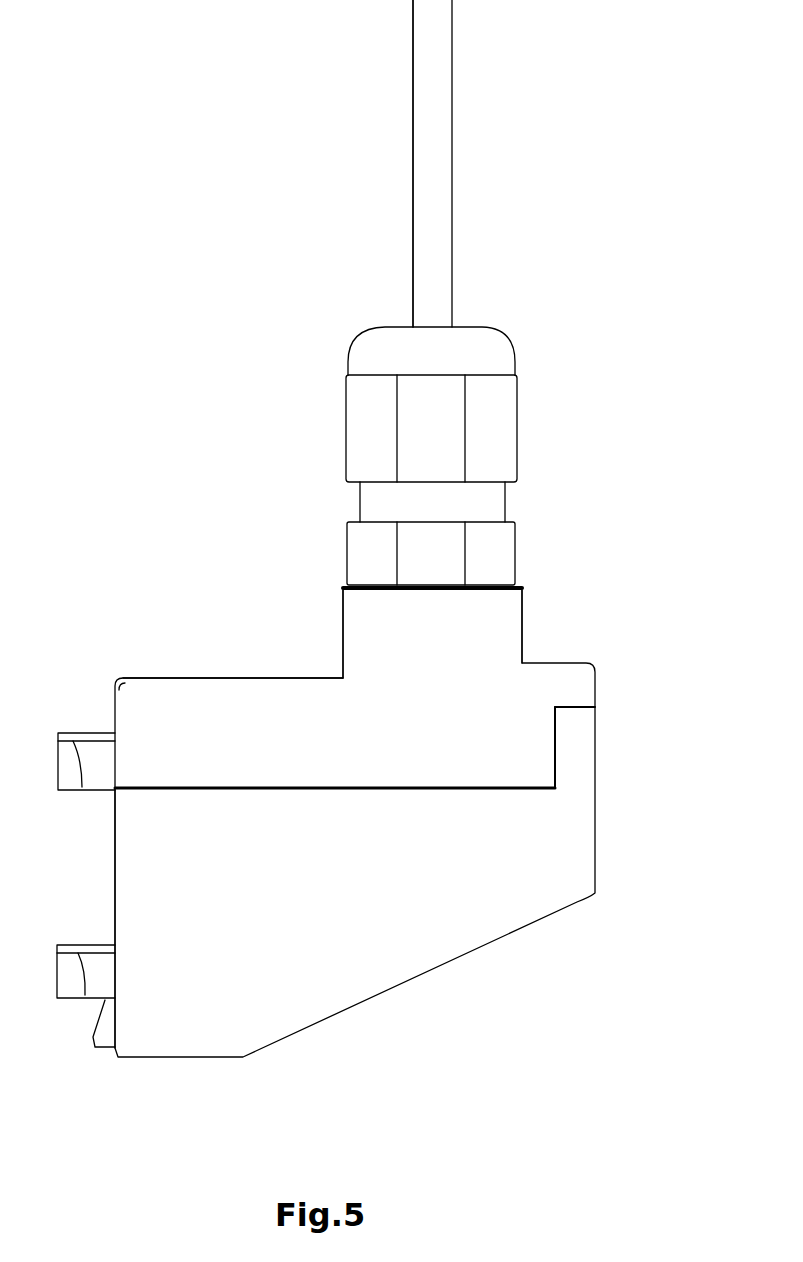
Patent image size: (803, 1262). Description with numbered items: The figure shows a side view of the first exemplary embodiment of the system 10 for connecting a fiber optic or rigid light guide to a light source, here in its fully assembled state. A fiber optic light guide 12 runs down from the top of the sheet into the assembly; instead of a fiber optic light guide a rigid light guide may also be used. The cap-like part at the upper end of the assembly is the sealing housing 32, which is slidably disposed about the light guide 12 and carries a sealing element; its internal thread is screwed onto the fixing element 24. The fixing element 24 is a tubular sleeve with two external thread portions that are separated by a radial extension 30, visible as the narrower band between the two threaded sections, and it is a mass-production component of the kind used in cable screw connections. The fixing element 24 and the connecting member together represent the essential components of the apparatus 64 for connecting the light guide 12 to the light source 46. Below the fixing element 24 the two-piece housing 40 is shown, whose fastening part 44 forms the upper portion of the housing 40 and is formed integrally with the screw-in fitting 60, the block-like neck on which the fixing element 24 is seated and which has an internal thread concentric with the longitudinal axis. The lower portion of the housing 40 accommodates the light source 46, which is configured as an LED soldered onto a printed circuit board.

The system 10 is at (212, 102).
The fiber optic light guide 12 is at (436, 58).
The sealing housing 32 is at (490, 357).
The apparatus 64 is at (214, 462).
The fixing element 24 is at (520, 511).
The radial extension 30 is at (488, 500).
The housing 40 is at (112, 605).
The screw-in fitting 60 is at (353, 607).
The fastening part 44 is at (215, 693).
The light source 46 is at (130, 890).